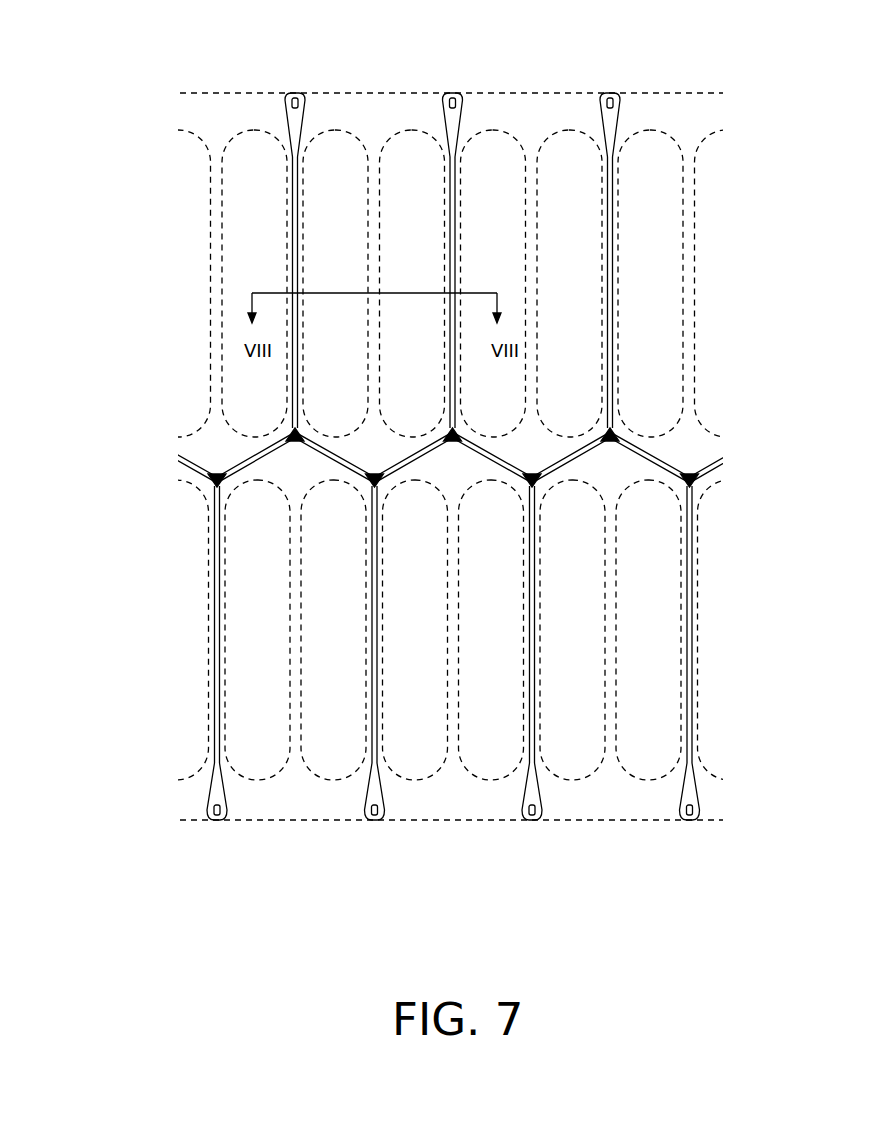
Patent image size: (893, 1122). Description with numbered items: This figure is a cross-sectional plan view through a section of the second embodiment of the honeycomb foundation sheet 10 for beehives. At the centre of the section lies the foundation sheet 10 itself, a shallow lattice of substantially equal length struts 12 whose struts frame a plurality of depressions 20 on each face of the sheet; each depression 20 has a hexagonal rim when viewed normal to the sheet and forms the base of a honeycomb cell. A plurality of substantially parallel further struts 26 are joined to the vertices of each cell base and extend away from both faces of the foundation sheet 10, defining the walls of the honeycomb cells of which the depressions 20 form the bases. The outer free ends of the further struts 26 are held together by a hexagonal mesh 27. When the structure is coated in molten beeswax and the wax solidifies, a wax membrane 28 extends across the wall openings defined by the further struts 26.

The honeycomb foundation sheet 10 is at (418, 456).
The strut 12 is at (462, 456).
The depression 20 is at (150, 468).
The further strut 26 is at (292, 200).
The hexagonal mesh 27 is at (286, 93).
The wax membrane 28 is at (412, 157).